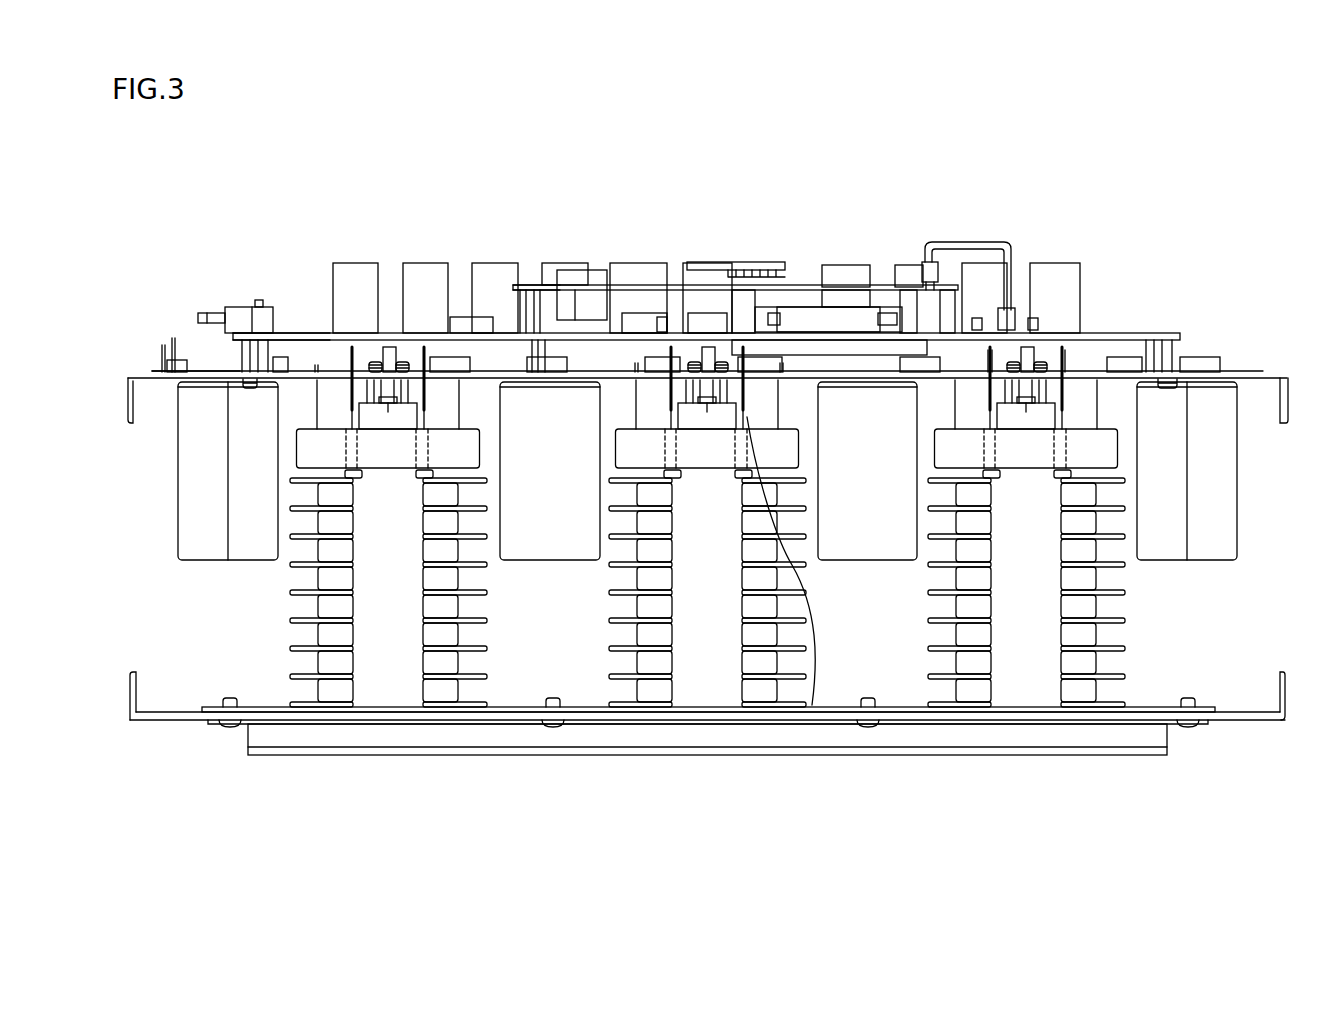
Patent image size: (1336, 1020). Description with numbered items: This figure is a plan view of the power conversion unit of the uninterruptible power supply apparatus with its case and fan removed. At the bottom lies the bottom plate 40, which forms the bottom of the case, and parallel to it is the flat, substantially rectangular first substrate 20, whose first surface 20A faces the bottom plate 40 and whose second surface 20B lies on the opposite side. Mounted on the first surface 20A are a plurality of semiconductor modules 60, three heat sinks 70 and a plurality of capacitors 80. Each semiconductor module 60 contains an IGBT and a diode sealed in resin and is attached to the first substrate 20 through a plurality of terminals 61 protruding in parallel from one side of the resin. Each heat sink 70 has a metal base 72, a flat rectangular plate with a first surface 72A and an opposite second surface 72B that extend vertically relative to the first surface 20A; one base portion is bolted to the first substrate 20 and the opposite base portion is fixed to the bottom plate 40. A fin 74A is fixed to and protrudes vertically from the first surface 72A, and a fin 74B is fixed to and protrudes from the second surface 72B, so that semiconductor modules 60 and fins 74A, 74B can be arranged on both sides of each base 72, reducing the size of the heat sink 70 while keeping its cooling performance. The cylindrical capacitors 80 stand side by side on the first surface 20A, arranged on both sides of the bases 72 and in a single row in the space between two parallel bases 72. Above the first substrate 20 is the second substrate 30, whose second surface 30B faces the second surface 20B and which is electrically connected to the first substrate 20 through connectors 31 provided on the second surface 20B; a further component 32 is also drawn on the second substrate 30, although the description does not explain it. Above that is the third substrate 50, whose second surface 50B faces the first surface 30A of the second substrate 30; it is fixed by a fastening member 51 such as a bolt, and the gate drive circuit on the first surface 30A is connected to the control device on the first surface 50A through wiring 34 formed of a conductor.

The first substrate 20 is at (1240, 372).
The first surface 20A is at (208, 382).
The second surface 20B is at (198, 370).
The second substrate 30 is at (1150, 333).
The first surface 30A is at (289, 333).
The second surface 30B is at (303, 347).
The connector 31 is at (388, 398).
The electronic component 32 is at (487, 262).
The wiring 34 is at (937, 258).
The bottom plate 40 is at (1245, 722).
The third substrate 50 is at (810, 285).
The first surface 50A is at (535, 285).
The second surface 50B is at (545, 290).
The fastening member 51 is at (908, 322).
The semiconductor module 60 is at (320, 500).
The terminal 61 is at (671, 408).
The heat sink 70 is at (389, 685).
The base 72 is at (388, 347).
The first surface 72A is at (355, 410).
The second surface 72B is at (418, 412).
The fin 74A is at (348, 417).
The fin 74B is at (428, 417).
The capacitor 80 is at (175, 518).